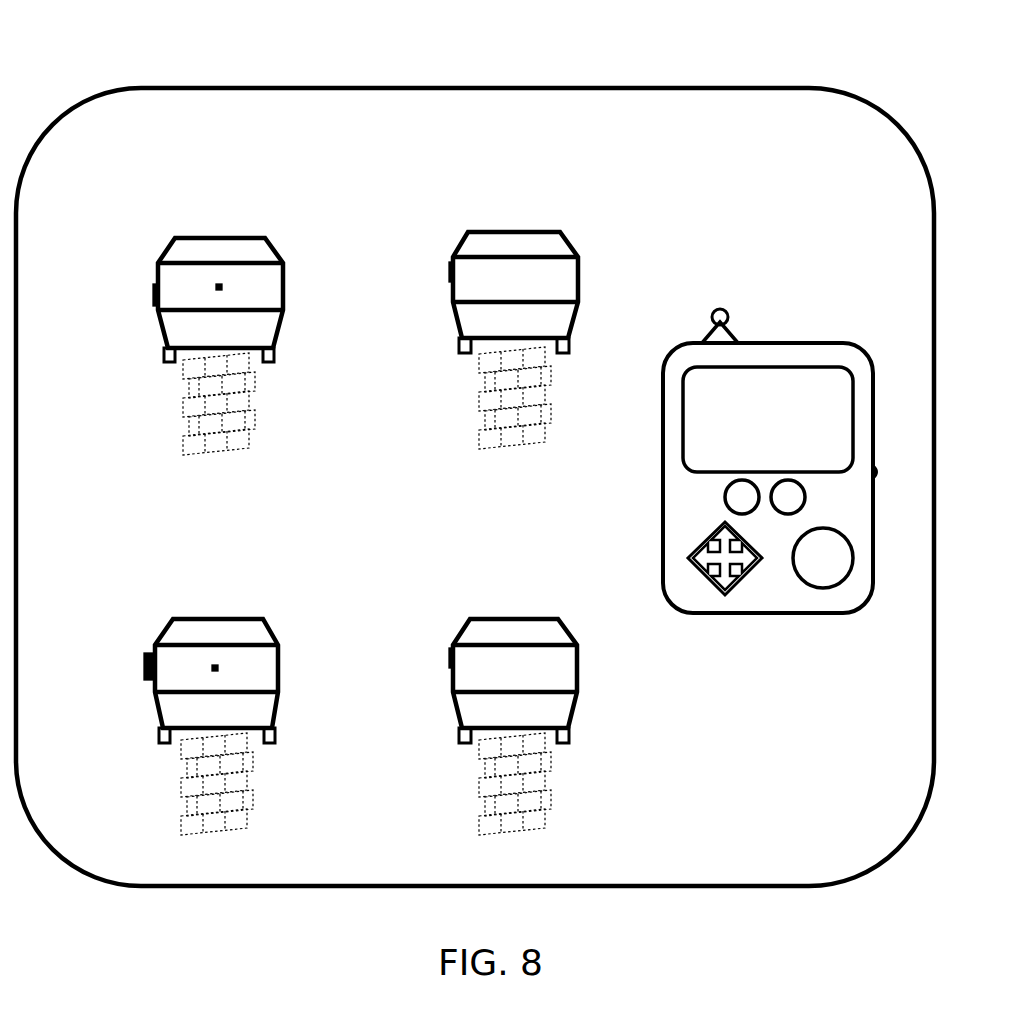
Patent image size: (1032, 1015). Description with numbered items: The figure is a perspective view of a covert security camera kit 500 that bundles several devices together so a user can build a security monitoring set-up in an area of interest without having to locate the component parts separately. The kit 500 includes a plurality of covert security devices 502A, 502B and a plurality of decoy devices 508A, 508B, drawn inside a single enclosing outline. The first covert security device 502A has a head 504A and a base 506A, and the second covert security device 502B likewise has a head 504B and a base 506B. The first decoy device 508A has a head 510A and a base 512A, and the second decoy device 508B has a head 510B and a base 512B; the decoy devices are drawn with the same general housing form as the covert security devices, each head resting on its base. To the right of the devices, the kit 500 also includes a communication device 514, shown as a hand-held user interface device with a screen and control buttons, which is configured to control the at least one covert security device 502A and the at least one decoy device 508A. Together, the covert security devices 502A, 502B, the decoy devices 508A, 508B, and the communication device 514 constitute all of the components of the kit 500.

The covert security camera kit 500 is at (593, 80).
The covert security device 502A is at (187, 203).
The head 504A is at (157, 301).
The base 506A is at (190, 432).
The decoy device 508A is at (508, 195).
The head 510A is at (453, 274).
The base 512A is at (483, 428).
The covert security device 502B is at (190, 588).
The head 504B is at (152, 684).
The base 506B is at (183, 820).
The decoy device 508B is at (510, 588).
The head 510B is at (455, 632).
The base 512B is at (483, 790).
The communication device 514 is at (778, 624).